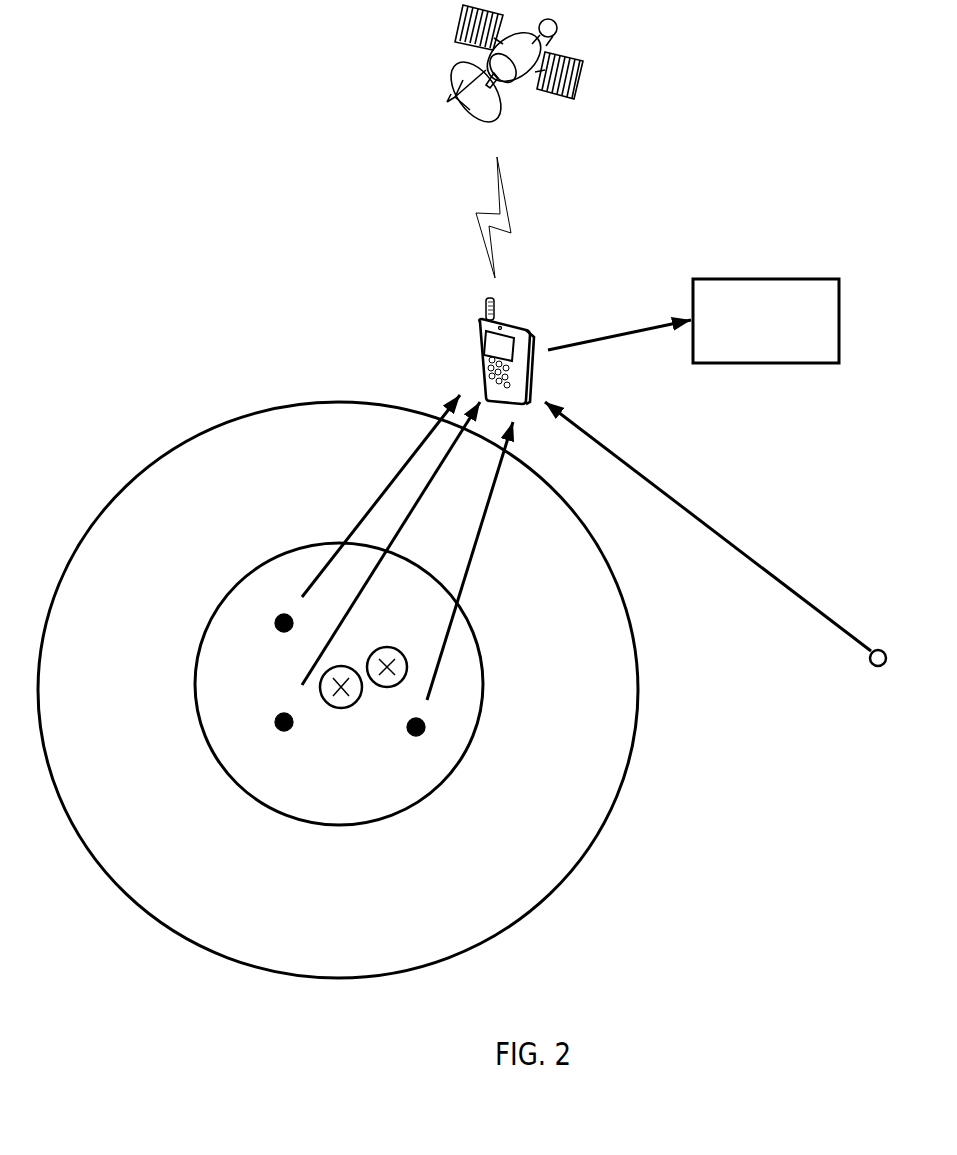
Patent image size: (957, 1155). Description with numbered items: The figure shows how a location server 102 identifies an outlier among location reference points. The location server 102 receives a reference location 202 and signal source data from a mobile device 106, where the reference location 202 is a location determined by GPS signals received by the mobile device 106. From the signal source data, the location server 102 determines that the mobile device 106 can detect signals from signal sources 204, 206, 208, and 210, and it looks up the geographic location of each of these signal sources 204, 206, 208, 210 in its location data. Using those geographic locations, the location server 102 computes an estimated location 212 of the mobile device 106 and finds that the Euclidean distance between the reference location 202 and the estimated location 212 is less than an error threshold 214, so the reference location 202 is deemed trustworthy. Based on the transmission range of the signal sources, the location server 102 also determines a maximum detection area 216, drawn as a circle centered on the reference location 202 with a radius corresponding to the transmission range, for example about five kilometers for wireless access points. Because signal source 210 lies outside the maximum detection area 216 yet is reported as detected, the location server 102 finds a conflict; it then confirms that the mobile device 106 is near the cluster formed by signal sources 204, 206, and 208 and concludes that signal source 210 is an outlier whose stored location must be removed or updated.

The location server 102 is at (770, 279).
The mobile device 106 is at (478, 340).
The reference location 202 is at (341, 708).
The signal source 204 is at (284, 722).
The signal source 206 is at (416, 727).
The signal source 208 is at (284, 623).
The signal source 210 is at (872, 664).
The estimated location 212 is at (407, 666).
The error threshold 214 is at (480, 737).
The maximum detection area 216 is at (592, 848).